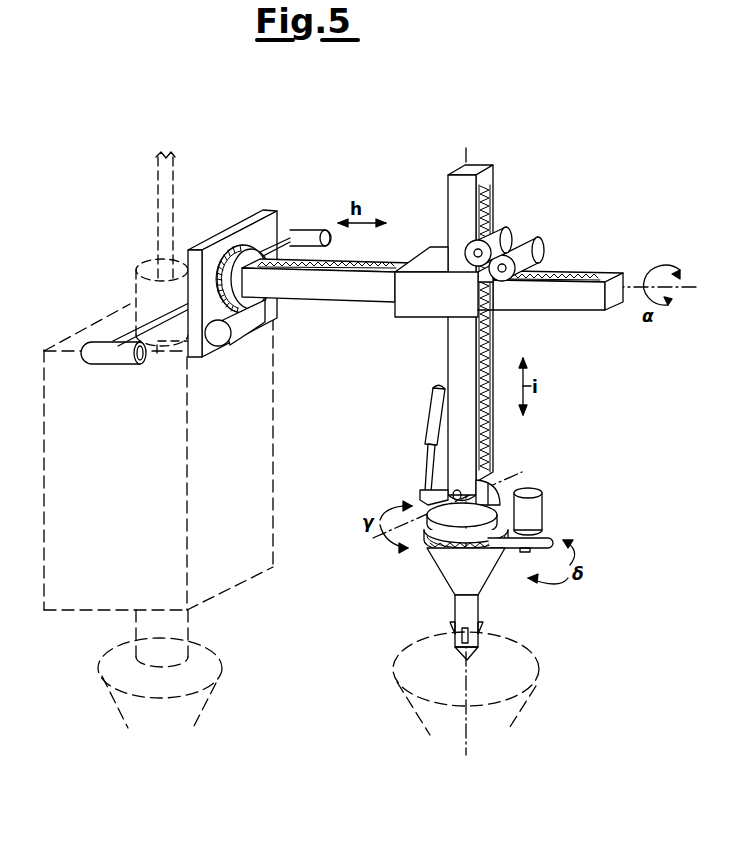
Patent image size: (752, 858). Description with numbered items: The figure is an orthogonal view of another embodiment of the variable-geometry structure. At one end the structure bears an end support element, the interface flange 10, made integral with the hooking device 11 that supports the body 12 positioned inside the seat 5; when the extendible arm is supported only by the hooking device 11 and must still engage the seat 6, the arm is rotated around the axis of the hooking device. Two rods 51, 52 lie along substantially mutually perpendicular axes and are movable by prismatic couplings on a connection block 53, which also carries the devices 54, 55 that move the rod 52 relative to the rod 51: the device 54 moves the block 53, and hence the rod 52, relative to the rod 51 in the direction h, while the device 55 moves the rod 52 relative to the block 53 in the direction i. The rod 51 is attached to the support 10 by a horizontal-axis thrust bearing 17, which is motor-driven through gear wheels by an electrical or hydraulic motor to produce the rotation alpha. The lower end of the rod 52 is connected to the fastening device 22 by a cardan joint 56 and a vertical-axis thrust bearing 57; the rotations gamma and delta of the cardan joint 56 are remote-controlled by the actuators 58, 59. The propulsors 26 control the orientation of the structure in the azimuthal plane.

The seat 5 is at (200, 714).
The seat 6 is at (512, 722).
The interface flange 10 is at (262, 217).
The hooking device 11 is at (138, 276).
The body 12 is at (265, 437).
The horizontal-axis thrust bearing 17 is at (243, 248).
The fastening device 22 is at (460, 610).
The propulsors 26 is at (112, 356).
The rod 51 is at (607, 276).
The rod 52 is at (488, 460).
The connection block 53 is at (412, 313).
The device 54 is at (530, 258).
The device 55 is at (495, 242).
The cardan joint 56 is at (504, 484).
The vertical-axis thrust bearing 57 is at (480, 554).
The actuator 58 is at (433, 416).
The actuator 59 is at (543, 503).